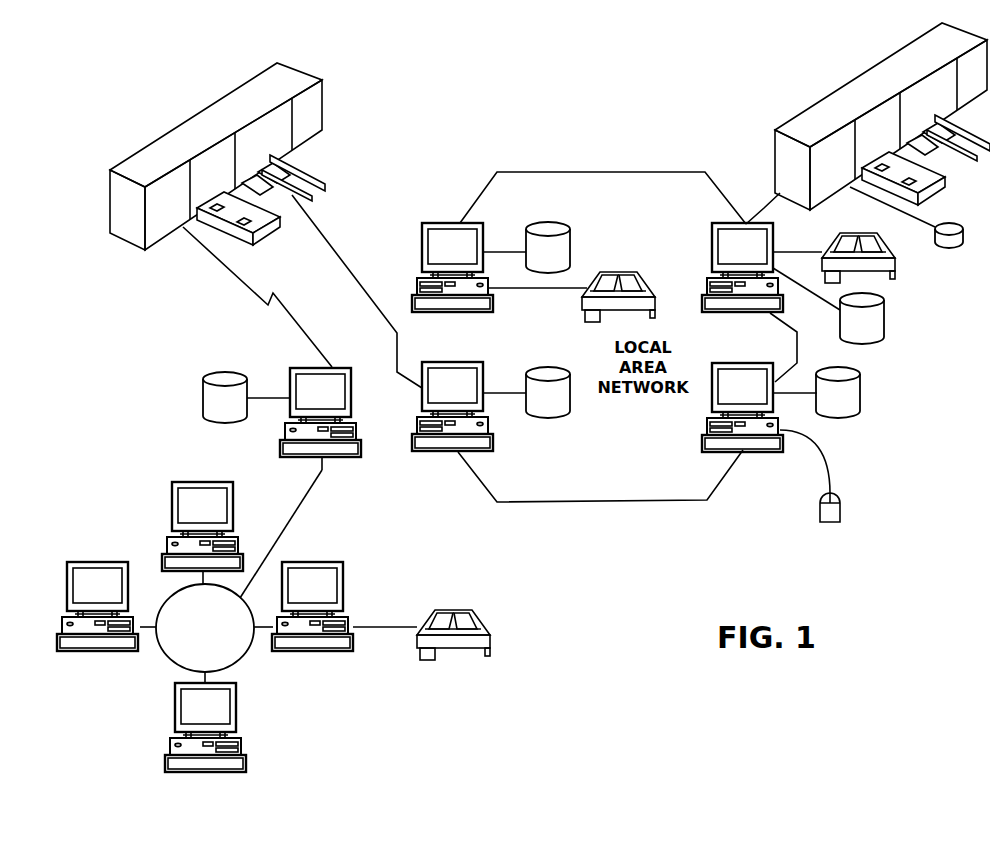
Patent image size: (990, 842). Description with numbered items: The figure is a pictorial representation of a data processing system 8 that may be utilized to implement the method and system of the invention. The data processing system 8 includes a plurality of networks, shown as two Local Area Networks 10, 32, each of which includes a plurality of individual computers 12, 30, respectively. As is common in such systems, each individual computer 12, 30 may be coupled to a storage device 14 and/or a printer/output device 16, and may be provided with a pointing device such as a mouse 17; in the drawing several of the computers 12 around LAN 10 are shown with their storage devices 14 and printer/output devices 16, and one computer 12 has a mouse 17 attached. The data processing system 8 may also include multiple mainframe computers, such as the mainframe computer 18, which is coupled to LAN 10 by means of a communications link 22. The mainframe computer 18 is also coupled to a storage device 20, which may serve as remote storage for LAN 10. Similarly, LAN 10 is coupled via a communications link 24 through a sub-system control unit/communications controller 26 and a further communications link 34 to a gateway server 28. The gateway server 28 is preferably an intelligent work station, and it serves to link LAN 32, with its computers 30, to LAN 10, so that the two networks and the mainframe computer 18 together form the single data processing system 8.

The data processing system 8 is at (659, 161).
The Local Area Network 10 is at (598, 502).
The individual computer 12 is at (438, 222).
The storage device 14 is at (565, 222).
The printer/output device 16 is at (642, 278).
The mouse 17 is at (840, 508).
The mainframe computer 18 is at (845, 82).
The storage device 20 is at (942, 248).
The communications link 22 is at (764, 208).
The communications link 24 is at (333, 247).
The sub-system control unit/communications controller 26 is at (163, 137).
The gateway server 28 is at (290, 373).
The individual computer 30 is at (172, 502).
The Local Area Network 32 is at (158, 653).
The communications link 34 is at (212, 262).